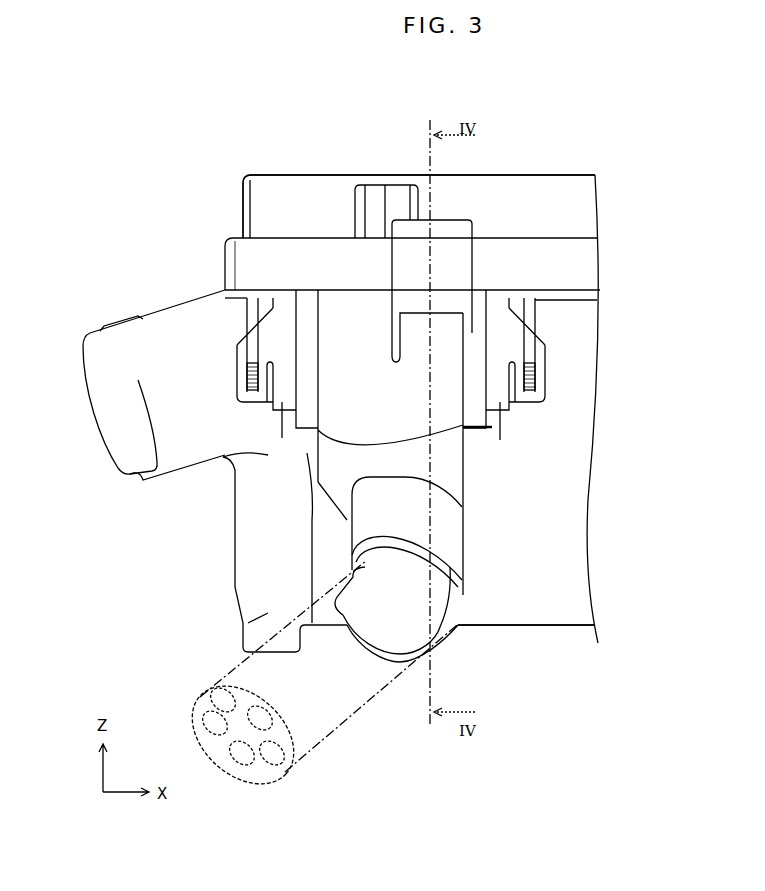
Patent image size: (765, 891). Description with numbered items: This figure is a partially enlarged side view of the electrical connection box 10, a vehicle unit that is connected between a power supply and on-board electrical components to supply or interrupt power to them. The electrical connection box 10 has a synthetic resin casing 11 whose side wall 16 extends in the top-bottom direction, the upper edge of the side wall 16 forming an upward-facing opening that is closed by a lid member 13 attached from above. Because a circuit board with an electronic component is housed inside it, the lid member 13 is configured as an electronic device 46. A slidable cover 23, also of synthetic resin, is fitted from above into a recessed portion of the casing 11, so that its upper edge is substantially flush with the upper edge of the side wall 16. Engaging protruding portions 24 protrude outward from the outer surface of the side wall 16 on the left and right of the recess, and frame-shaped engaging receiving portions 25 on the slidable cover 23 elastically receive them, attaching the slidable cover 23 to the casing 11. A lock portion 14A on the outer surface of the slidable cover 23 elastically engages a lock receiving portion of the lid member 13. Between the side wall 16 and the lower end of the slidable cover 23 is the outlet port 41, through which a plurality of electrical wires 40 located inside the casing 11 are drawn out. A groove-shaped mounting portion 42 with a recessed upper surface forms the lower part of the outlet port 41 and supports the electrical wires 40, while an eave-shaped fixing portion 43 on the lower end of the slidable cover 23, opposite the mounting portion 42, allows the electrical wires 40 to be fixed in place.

The electrical connection box 10 is at (238, 110).
The lid member 13 is at (305, 188).
The electronic device 46 is at (419, 162).
The lock portion 14A is at (455, 263).
The casing 11 is at (573, 448).
The side wall 16 is at (563, 487).
The engaging protruding portions 24 is at (235, 380).
The engaging receiving portions 25 is at (245, 395).
The slidable cover 23 is at (447, 407).
The fixing portion 43 is at (367, 510).
The outlet port 41 is at (470, 623).
The mounting portion 42 is at (440, 643).
The electrical wires 40 is at (205, 720).